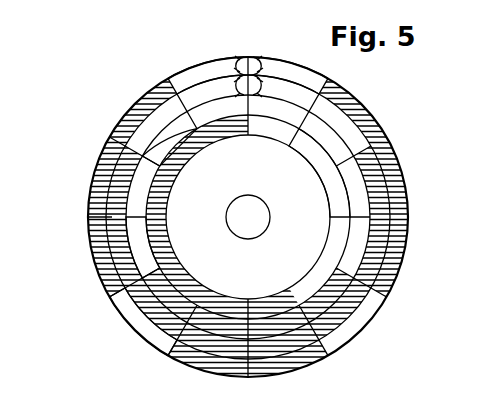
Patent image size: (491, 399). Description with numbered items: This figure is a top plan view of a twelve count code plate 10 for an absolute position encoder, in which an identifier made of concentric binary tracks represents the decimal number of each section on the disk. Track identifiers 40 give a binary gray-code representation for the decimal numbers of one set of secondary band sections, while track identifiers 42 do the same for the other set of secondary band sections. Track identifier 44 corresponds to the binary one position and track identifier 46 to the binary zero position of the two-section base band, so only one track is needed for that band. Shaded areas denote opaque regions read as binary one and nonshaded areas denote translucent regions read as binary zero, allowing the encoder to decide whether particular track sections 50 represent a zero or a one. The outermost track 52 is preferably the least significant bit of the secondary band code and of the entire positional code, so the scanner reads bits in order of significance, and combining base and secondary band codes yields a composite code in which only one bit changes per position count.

The code plate 10 is at (410, 213).
The track identifiers 40 is at (244, 57).
The track identifiers 42 is at (253, 57).
The track identifier 44 is at (157, 167).
The track identifier 46 is at (330, 183).
The track sections 50 is at (137, 237).
The outermost track 52 is at (141, 316).